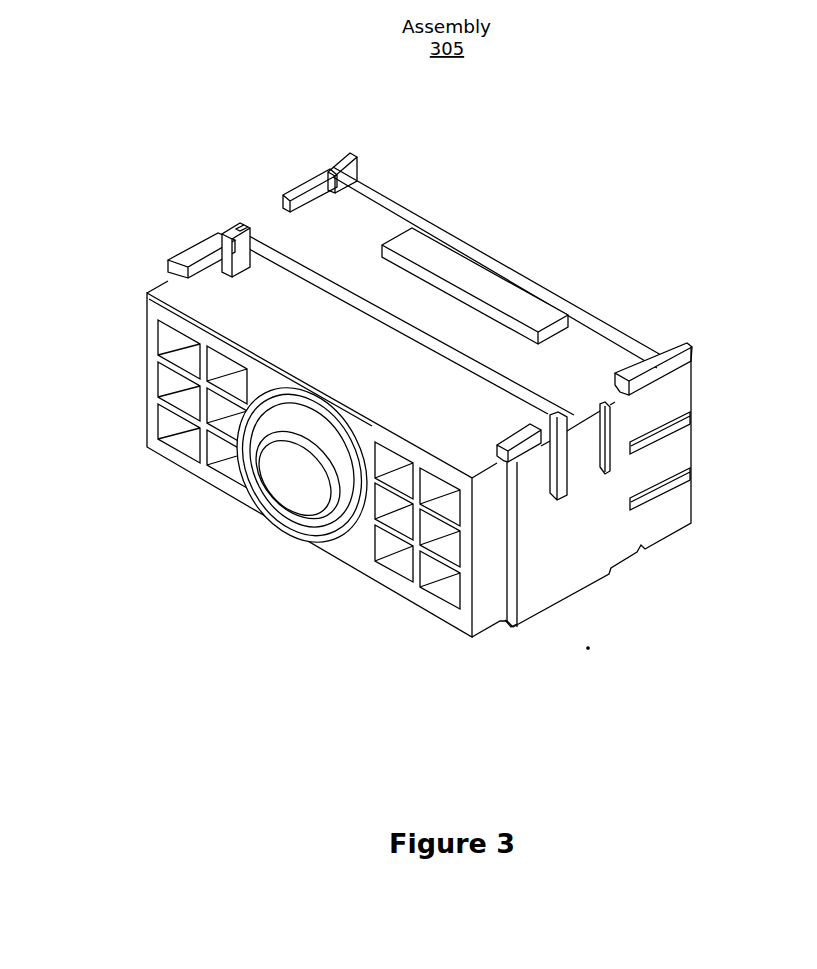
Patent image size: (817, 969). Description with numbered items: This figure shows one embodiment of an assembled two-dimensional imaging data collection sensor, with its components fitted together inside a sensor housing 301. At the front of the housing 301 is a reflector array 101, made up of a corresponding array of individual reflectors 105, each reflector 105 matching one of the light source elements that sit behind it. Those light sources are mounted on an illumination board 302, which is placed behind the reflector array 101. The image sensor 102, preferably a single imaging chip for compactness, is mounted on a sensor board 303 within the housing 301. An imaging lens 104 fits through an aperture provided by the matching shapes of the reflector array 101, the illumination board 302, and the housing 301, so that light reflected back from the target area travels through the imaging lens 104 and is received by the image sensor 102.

The reflector array 101 is at (222, 287).
The image sensor 102 is at (480, 283).
The imaging lens 104 is at (294, 527).
The reflector 105 is at (182, 433).
The sensor housing 301 is at (550, 577).
The illumination board 302 is at (273, 256).
The sensor board 303 is at (612, 330).